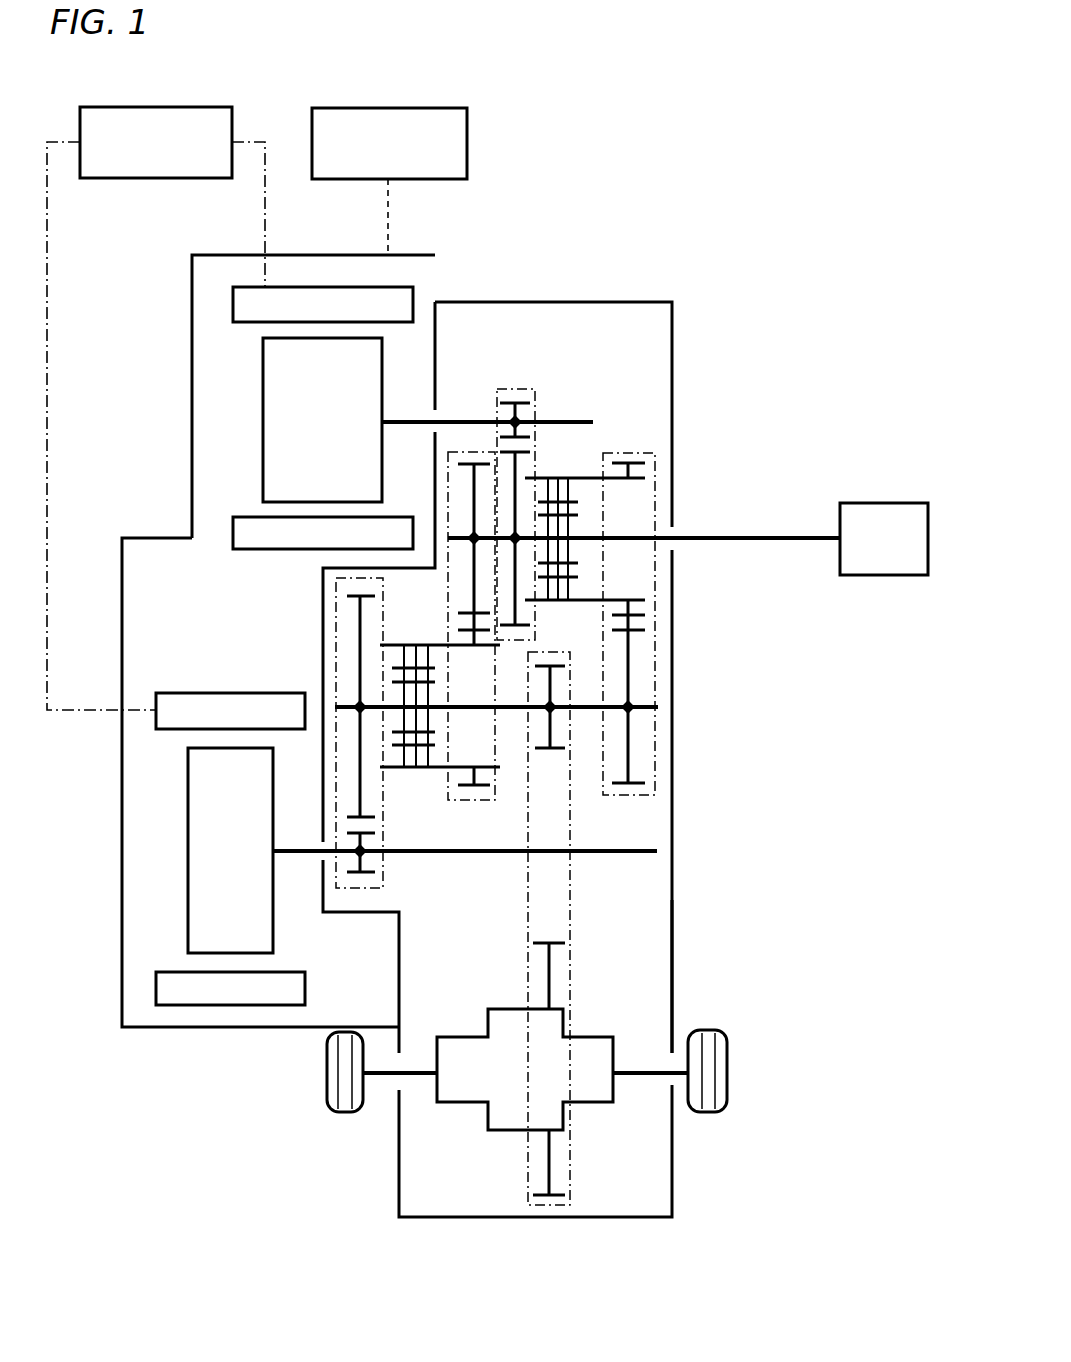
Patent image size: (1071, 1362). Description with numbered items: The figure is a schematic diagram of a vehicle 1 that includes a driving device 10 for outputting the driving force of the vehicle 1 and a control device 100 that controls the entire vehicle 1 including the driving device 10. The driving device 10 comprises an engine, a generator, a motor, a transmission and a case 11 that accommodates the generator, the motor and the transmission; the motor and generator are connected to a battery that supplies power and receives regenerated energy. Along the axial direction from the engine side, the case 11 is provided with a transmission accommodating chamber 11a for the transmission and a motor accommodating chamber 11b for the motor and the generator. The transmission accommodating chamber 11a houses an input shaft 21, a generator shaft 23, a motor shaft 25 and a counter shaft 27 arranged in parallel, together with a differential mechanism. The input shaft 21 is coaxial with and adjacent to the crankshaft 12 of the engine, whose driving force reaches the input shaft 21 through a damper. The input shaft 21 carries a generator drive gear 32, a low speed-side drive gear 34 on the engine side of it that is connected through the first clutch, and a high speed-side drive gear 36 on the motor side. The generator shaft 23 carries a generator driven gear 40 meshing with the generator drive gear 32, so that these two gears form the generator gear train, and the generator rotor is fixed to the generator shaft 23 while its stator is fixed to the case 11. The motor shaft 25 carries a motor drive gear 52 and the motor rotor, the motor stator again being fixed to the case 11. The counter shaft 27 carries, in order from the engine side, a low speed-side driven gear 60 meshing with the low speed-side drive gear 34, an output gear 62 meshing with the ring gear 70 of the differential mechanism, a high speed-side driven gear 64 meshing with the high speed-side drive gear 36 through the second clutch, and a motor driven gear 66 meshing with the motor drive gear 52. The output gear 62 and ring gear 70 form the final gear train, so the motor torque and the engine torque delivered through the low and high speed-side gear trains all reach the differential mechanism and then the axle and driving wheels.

The vehicle 1 is at (593, 133).
The driving device 10 is at (482, 280).
The case 11 is at (672, 336).
The transmission accommodating chamber 11a is at (650, 897).
The motor accommodating chamber 11b is at (165, 568).
The crankshaft 12 is at (774, 535).
The input shaft 21 is at (657, 537).
The generator shaft 23 is at (591, 421).
The motor shaft 25 is at (645, 850).
The counter shaft 27 is at (660, 709).
The generator drive gear 32 is at (518, 455).
The low speed-side drive gear 34 is at (640, 462).
The high speed-side drive gear 36 is at (468, 462).
The generator driven gear 40 is at (508, 390).
The motor drive gear 52 is at (372, 873).
The low speed-side driven gear 60 is at (642, 633).
The output gear 62 is at (556, 665).
The high speed-side driven gear 64 is at (478, 790).
The motor driven gear 66 is at (368, 596).
The ring gear 70 is at (540, 942).
The control device 100 is at (430, 107).